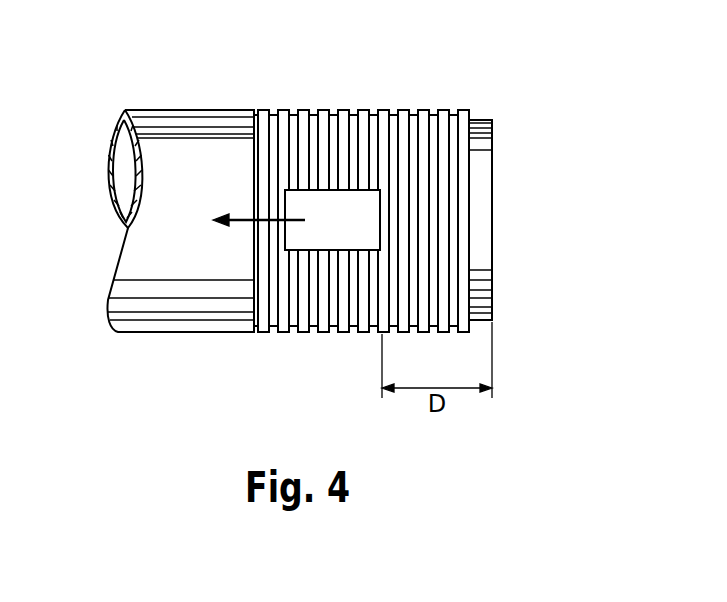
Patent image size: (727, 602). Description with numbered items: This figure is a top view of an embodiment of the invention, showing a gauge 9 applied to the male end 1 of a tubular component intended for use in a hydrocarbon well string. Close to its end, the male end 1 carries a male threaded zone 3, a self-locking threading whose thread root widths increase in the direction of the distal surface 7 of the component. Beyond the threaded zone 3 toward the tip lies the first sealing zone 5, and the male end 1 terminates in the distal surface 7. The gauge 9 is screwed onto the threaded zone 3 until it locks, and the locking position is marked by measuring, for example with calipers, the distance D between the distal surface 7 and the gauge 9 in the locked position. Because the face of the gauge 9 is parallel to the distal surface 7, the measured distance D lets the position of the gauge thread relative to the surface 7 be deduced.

The male end 1 is at (201, 101).
The male threaded zone 3 is at (317, 101).
The first sealing zone 5 is at (472, 111).
The distal surface 7 is at (493, 172).
The gauge 9 is at (340, 212).